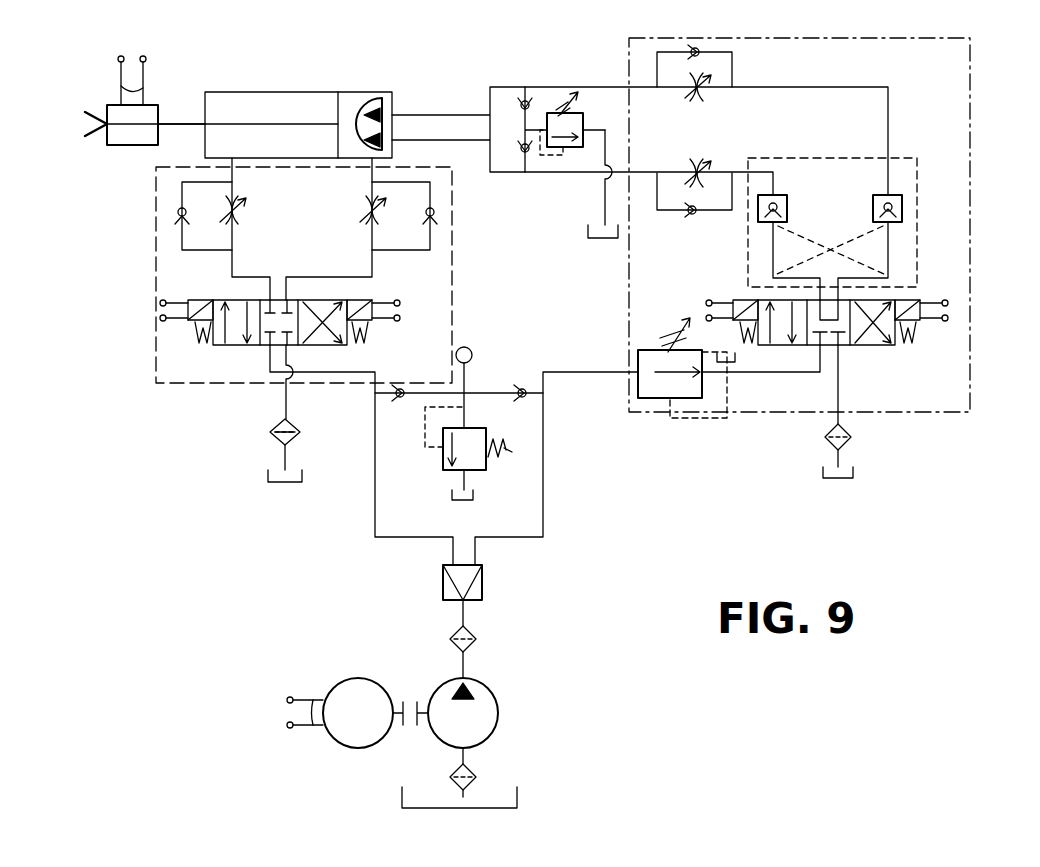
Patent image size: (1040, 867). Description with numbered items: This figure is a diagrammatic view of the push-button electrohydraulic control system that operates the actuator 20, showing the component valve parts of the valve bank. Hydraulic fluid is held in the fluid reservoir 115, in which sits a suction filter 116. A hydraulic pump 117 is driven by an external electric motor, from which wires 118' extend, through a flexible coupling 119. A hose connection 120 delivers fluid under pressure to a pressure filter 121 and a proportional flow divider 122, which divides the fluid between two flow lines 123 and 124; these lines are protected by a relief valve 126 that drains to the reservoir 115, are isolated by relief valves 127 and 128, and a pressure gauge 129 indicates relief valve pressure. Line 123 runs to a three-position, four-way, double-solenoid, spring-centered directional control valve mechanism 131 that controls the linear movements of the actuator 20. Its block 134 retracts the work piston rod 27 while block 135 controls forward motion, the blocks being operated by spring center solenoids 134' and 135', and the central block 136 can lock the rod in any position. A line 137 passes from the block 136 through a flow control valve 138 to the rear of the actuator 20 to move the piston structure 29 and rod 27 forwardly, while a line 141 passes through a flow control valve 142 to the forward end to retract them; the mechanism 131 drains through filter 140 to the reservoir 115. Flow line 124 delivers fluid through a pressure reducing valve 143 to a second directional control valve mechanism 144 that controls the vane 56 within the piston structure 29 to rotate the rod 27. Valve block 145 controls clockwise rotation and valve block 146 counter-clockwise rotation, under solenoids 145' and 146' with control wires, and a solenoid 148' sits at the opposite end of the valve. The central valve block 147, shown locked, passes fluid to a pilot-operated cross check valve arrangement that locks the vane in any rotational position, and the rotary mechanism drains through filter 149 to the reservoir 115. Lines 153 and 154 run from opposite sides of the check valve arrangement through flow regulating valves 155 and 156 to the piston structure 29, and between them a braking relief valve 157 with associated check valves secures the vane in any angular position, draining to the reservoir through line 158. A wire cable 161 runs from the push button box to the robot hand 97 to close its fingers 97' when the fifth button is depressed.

The actuator 20 is at (240, 92).
The work piston rod 27 is at (175, 124).
The piston structure 29 is at (345, 105).
The vane 56 is at (385, 105).
The robot hand 97 is at (125, 141).
The fingers 97' is at (63, 132).
The fluid reservoir 115 is at (285, 483).
The suction filter 116 is at (476, 772).
The hydraulic pump 117 is at (487, 705).
The wires 118' is at (340, 698).
The flexible coupling 119 is at (412, 698).
The hose connection 120 is at (465, 670).
The pressure filter 121 is at (478, 637).
The proportional flow divider 122 is at (485, 585).
The flow line 123 is at (375, 505).
The flow line 124 is at (545, 485).
The relief valve 126 is at (455, 464).
The relief valve 127 is at (395, 389).
The relief valve 128 is at (522, 387).
The pressure gauge 129 is at (470, 347).
The directional control valve mechanism 131 is at (254, 358).
The block 134 is at (262, 306).
The spring center solenoid 134' is at (156, 328).
The block 135 is at (345, 360).
The spring center solenoid 135' is at (385, 308).
The central block 136 is at (278, 300).
The line 137 is at (320, 278).
The flow control valve 138 is at (392, 222).
The filter 140 is at (272, 430).
The line 141 is at (232, 270).
The flow control valve 142 is at (180, 200).
The pressure reducing valve 143 is at (660, 404).
The directional control valve mechanism 144 is at (845, 327).
The valve block 145 is at (788, 337).
The solenoid 145' is at (858, 222).
The valve block 146 is at (889, 342).
The solenoid 146' is at (961, 300).
The central valve block 147 is at (845, 346).
The solenoid 148' is at (710, 308).
The filter 149 is at (850, 440).
The line 153 is at (740, 170).
The line 154 is at (795, 87).
The flow regulating valve 155 is at (712, 200).
The flow regulating valve 156 is at (713, 50).
The braking relief valve 157 is at (565, 108).
The line 158 is at (600, 160).
The wire cable 161 is at (143, 78).